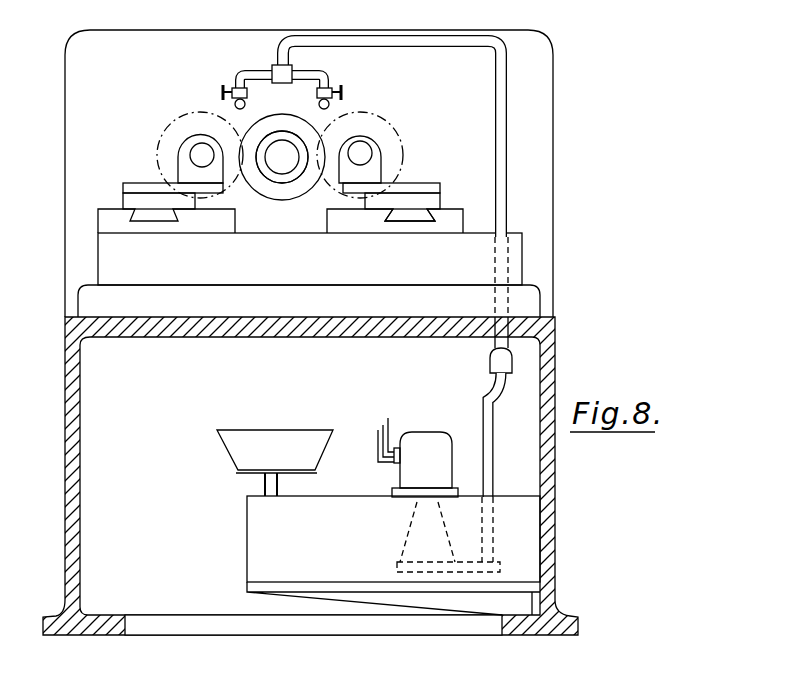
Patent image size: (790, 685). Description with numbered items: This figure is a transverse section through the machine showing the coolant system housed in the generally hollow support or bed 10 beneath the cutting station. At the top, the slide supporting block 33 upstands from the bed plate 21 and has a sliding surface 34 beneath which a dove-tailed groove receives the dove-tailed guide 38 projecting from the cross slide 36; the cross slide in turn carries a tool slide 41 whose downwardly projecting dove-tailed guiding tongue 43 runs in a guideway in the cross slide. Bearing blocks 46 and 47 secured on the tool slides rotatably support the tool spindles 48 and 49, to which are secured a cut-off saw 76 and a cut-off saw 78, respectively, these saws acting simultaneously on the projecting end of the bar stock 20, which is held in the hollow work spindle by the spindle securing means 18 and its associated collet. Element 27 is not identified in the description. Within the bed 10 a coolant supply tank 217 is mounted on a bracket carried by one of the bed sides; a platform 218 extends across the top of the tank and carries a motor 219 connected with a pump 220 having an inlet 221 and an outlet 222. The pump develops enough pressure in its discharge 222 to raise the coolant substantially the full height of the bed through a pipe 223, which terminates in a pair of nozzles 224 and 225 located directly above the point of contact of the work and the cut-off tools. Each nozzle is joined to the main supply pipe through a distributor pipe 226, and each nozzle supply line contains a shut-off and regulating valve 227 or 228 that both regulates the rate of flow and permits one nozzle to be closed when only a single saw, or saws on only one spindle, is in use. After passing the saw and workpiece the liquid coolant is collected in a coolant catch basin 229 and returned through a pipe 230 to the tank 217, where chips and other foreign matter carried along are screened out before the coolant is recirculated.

The support or bed 10 is at (545, 502).
The spindle securing means 18 is at (306, 190).
The bar stock 20 is at (270, 180).
The bed plate 21 is at (550, 312).
The spindle head 27 is at (282, 133).
The slide supporting block 33 is at (513, 262).
The sliding surface 34 is at (443, 213).
The cross slide 36 is at (397, 230).
The dove-tailed guide 38 is at (417, 218).
The tool slide 41 is at (132, 187).
The dove-tailed guiding tongue 43 is at (143, 223).
The bearing block 46 is at (367, 177).
The bearing block 47 is at (192, 167).
The tool spindle 48 is at (372, 150).
The tool spindle 49 is at (197, 152).
The cut-off saw 76 is at (390, 130).
The cut-off saw 78 is at (183, 130).
The coolant supply tank 217 is at (265, 538).
The platform 218 is at (407, 495).
The motor 219 is at (428, 437).
The pump 220 is at (415, 532).
The inlet 221 is at (397, 557).
The outlet 222 is at (435, 570).
The pipe 223 is at (503, 202).
The nozzle 224 is at (333, 103).
The nozzle 225 is at (230, 105).
The distributor pipe 226 is at (300, 70).
The shut-off and regulating valve 227 is at (343, 92).
The shut-off and regulating valve 228 is at (218, 88).
The coolant catch basin 229 is at (263, 408).
The pipe 230 is at (273, 487).